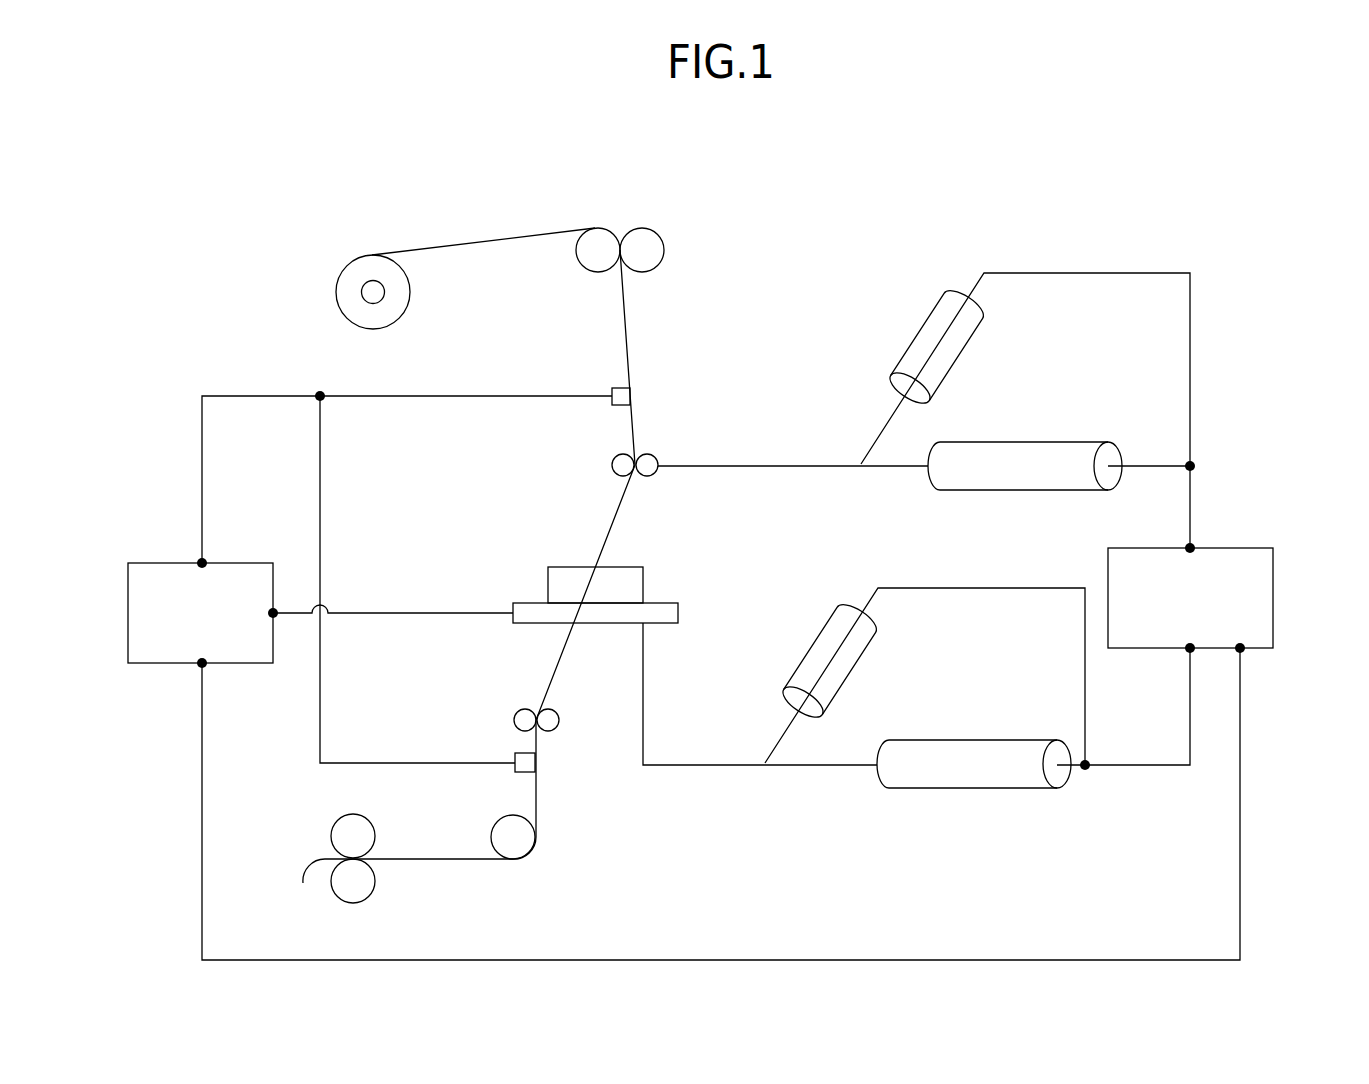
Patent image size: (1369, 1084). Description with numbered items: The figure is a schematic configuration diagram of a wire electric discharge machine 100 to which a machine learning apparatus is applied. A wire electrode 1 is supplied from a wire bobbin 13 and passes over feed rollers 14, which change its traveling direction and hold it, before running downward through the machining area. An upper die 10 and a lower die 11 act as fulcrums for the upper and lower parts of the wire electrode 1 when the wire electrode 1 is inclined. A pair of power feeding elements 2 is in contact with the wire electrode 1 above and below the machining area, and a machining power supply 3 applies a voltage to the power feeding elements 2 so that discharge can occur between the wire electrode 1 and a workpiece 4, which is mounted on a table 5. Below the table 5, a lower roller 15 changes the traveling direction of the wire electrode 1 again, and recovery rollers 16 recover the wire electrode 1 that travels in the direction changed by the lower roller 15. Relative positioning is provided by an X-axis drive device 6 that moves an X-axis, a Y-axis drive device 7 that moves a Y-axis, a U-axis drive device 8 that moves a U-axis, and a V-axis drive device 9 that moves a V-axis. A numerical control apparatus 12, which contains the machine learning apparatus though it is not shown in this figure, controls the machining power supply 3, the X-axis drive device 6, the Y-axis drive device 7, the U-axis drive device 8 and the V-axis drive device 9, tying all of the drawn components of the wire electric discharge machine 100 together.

The wire electrode 1 is at (630, 352).
The power feeding elements 2 is at (617, 388).
The machining power supply 3 is at (246, 541).
The workpiece 4 is at (643, 583).
The table 5 is at (678, 612).
The X-axis drive device 6 is at (963, 789).
The Y-axis drive device 7 is at (798, 663).
The U-axis drive device 8 is at (995, 491).
The V-axis drive device 9 is at (922, 322).
The upper die 10 is at (612, 463).
The lower die 11 is at (513, 718).
The numerical control apparatus 12 is at (1238, 548).
The wire bobbin 13 is at (363, 267).
The feed rollers 14 is at (642, 242).
The lower roller 15 is at (523, 835).
The recovery rollers 16 is at (360, 833).
The wire electric discharge machine 100 is at (1067, 144).